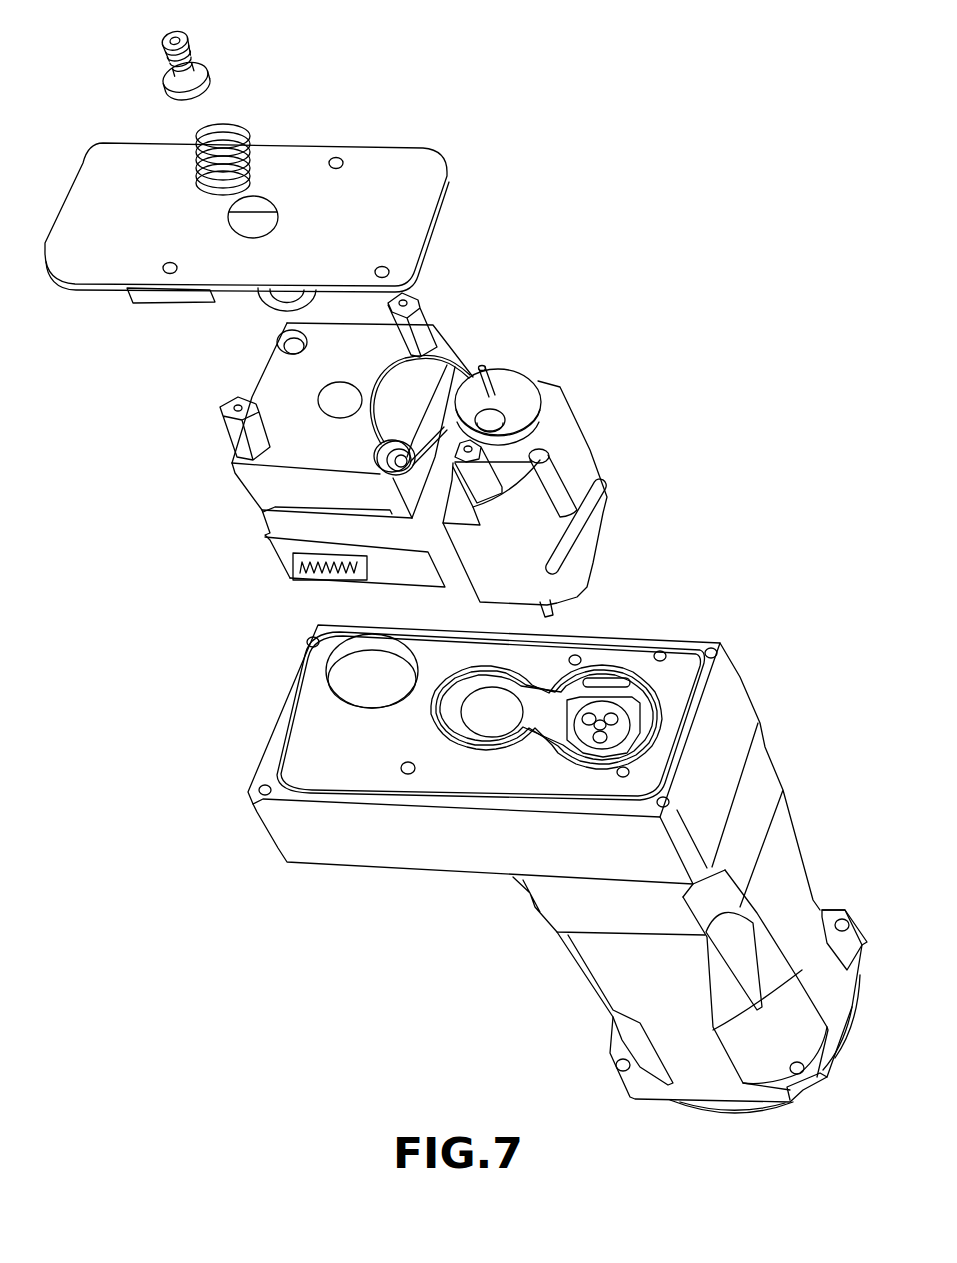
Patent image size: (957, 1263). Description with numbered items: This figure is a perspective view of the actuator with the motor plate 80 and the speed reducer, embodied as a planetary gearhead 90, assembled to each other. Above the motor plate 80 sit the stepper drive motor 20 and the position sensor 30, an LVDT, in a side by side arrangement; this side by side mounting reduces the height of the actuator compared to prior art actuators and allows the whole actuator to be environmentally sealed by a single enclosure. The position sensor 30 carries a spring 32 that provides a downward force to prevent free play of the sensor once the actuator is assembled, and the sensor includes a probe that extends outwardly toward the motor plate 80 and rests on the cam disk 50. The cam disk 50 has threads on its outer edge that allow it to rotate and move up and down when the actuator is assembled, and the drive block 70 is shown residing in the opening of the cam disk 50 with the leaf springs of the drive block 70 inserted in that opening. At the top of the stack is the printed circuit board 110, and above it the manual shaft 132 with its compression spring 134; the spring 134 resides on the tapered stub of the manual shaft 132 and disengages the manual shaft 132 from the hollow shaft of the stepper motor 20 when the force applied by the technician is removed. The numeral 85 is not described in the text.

The manual shaft 132 is at (197, 63).
The compression spring 134 is at (243, 137).
The printed circuit board 110 is at (377, 150).
The stepper drive motor 20 is at (262, 374).
The spring 32 is at (393, 462).
The position sensor 30 is at (563, 397).
The motor plate 80 is at (650, 622).
The gasket 85 is at (320, 754).
The drive block 70 is at (600, 750).
The cam disk 50 is at (646, 693).
The planetary gearhead 90 is at (793, 867).